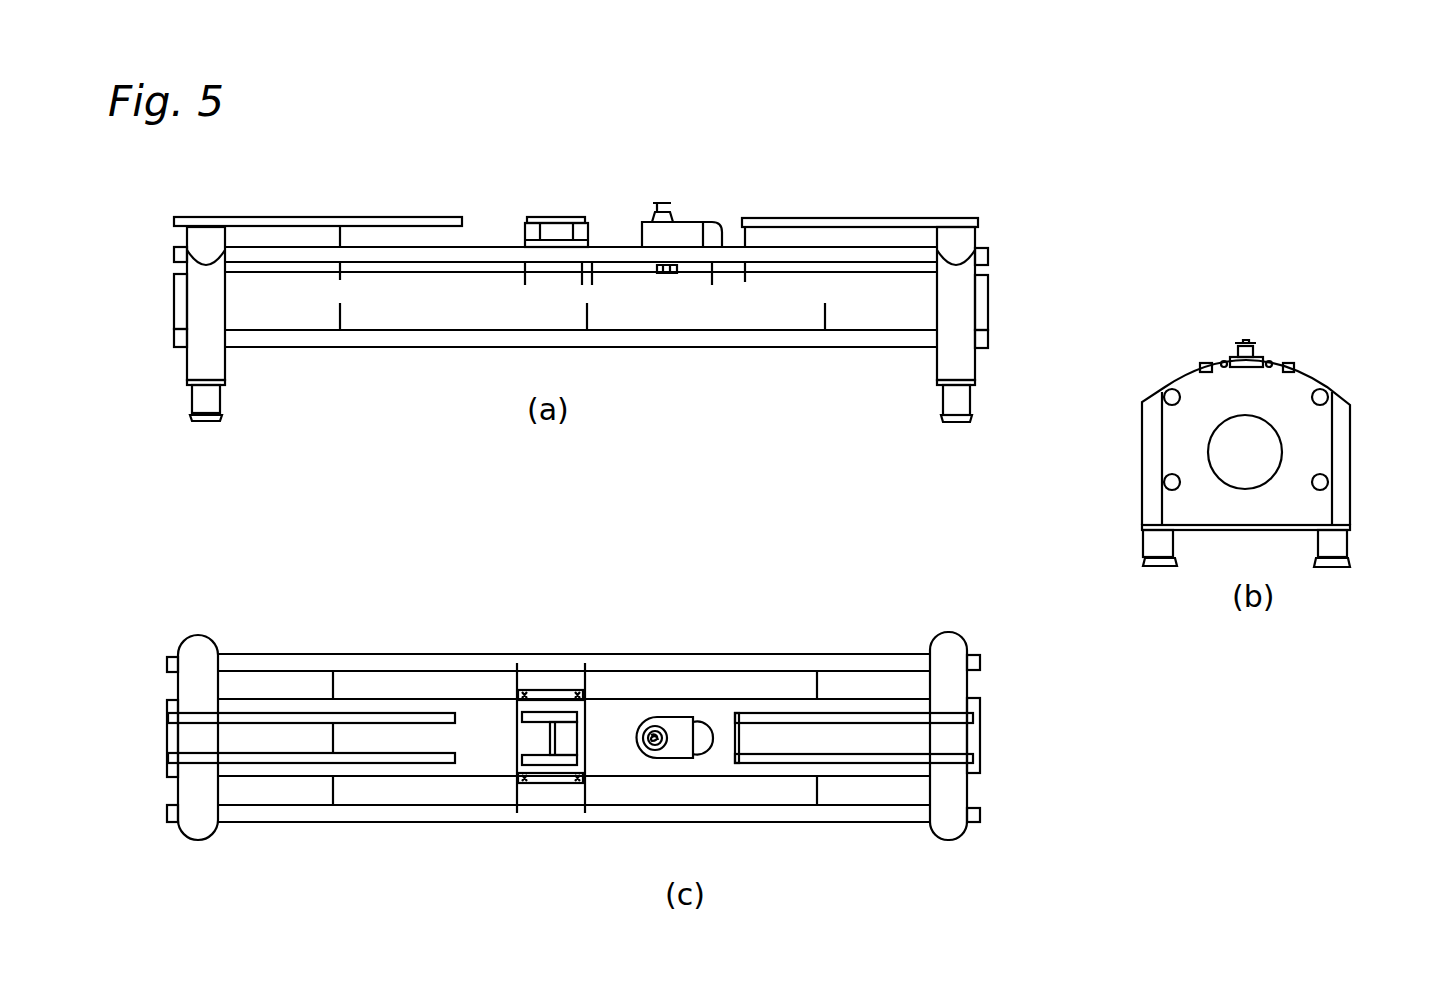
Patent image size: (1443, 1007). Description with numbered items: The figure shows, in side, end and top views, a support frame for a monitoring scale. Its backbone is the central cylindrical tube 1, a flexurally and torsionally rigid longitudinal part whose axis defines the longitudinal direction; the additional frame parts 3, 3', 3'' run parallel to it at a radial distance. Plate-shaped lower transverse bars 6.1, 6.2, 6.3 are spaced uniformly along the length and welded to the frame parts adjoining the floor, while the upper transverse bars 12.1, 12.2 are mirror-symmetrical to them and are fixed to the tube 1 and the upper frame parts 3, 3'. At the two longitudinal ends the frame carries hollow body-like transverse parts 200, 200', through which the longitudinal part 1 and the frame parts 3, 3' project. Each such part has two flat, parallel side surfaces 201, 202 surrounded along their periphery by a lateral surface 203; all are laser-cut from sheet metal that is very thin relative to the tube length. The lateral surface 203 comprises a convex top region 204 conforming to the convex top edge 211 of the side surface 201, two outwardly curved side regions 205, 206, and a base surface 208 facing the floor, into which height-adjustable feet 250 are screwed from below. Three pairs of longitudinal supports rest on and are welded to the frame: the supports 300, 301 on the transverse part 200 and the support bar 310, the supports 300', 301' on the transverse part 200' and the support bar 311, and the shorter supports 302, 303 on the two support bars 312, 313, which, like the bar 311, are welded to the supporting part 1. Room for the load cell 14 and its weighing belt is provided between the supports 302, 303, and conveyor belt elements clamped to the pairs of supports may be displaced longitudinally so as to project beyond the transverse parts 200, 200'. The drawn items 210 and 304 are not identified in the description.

The central cylindrical tube 1 is at (452, 307).
The additional frame part 3 is at (574, 690).
The additional frame part 3' is at (574, 508).
The additional frame part 3'' is at (755, 316).
The lower transverse bar 6.1 is at (345, 318).
The lower transverse bar 6.2 is at (590, 316).
The lower transverse bar 6.3 is at (829, 316).
The upper transverse bar 12.1 is at (590, 690).
The upper transverse bar 12.2 is at (512, 687).
The load cell 14 is at (692, 208).
The hollow body-like transverse part 200 is at (774, 533).
The hollow body-like transverse part 200' is at (970, 533).
The side surface 201 is at (180, 372).
The side surface 202 is at (238, 300).
The lateral surface 203 is at (205, 300).
The top region 204 is at (196, 685).
The side region 205 is at (200, 855).
The side region 206 is at (200, 625).
The base surface 208 is at (975, 396).
The base plate 210 is at (1205, 535).
The convex top edge 211 is at (1305, 378).
The height-adjustable feet 250 is at (223, 403).
The longitudinal support 300 is at (315, 521).
The longitudinal support 300' is at (856, 529).
The longitudinal support 301 is at (311, 667).
The longitudinal support 301' is at (854, 659).
The longitudinal support 302 is at (557, 212).
The longitudinal support 303 is at (547, 715).
The fastening element 304 is at (471, 212).
The support bar 310 is at (345, 237).
The support bar 311 is at (743, 740).
The support bar 312 is at (548, 740).
The support bar 313 is at (575, 740).